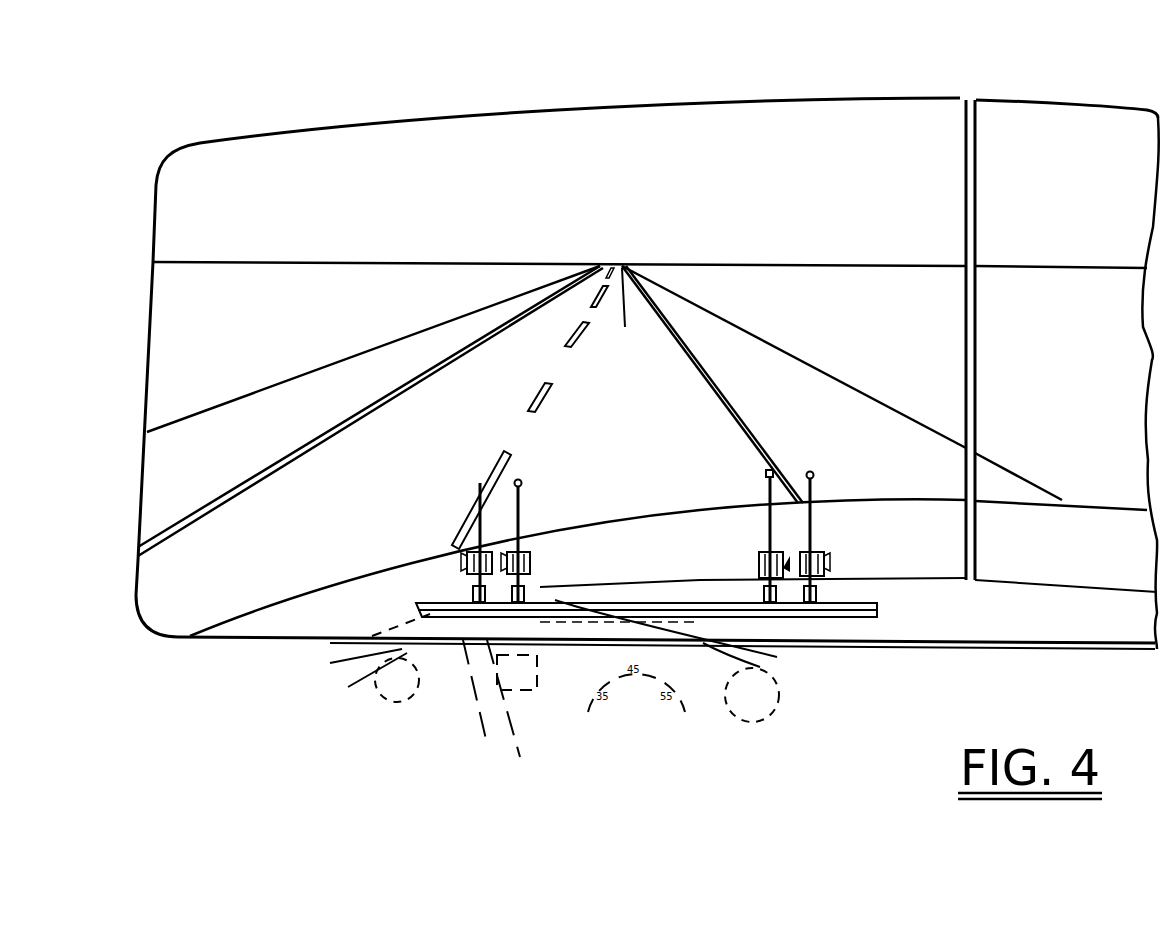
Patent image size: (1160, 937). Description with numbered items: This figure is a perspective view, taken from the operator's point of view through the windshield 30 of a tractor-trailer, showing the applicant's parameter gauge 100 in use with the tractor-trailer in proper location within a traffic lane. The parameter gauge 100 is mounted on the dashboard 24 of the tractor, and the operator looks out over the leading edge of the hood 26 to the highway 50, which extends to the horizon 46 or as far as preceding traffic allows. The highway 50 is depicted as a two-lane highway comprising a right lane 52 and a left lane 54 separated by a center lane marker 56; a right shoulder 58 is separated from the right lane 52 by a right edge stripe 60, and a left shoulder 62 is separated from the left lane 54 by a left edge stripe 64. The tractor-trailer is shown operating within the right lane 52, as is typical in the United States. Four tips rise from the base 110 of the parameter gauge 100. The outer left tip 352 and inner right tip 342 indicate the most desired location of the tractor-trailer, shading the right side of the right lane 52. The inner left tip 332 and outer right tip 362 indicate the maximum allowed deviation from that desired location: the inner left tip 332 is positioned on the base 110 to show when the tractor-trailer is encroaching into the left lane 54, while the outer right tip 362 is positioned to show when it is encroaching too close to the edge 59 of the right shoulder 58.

The windshield 30 is at (783, 156).
The horizon 46 is at (700, 266).
The highway 50 is at (619, 240).
The right lane 52 is at (621, 266).
The left lane 54 is at (527, 345).
The center lane marker 56 is at (574, 318).
The right shoulder 58 is at (752, 352).
The edge of shoulder 59 is at (835, 379).
The right edge stripe 60 is at (736, 415).
The left shoulder 62 is at (387, 363).
The left edge stripe 64 is at (368, 407).
The hood 26 is at (630, 548).
The dashboard 24 is at (840, 628).
The parameter gauge 100 is at (904, 584).
The base 110 is at (800, 608).
The inner left tip 332 is at (522, 482).
The inner right tip 342 is at (766, 472).
The outer left tip 352 is at (477, 486).
The outer right tip 362 is at (814, 476).